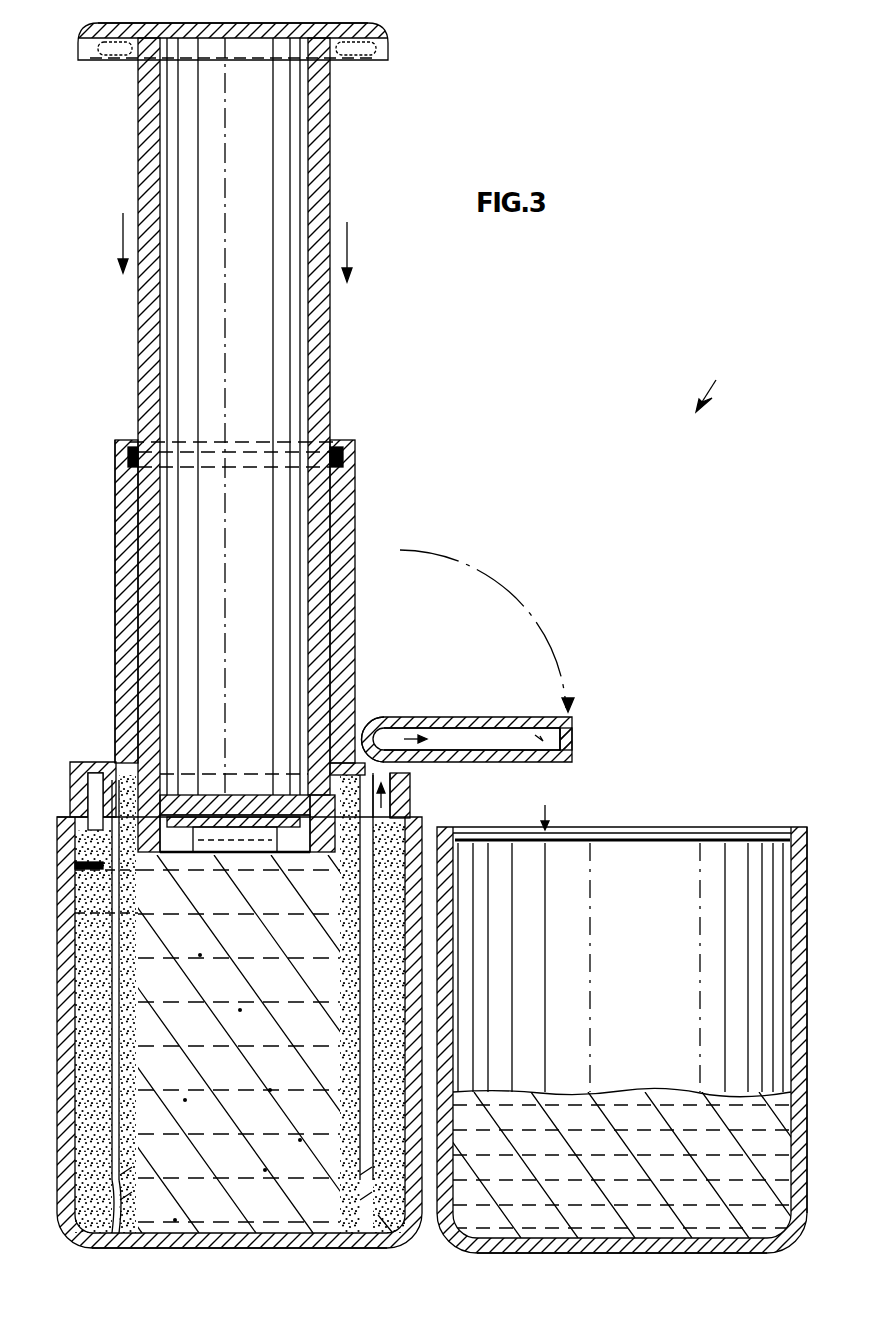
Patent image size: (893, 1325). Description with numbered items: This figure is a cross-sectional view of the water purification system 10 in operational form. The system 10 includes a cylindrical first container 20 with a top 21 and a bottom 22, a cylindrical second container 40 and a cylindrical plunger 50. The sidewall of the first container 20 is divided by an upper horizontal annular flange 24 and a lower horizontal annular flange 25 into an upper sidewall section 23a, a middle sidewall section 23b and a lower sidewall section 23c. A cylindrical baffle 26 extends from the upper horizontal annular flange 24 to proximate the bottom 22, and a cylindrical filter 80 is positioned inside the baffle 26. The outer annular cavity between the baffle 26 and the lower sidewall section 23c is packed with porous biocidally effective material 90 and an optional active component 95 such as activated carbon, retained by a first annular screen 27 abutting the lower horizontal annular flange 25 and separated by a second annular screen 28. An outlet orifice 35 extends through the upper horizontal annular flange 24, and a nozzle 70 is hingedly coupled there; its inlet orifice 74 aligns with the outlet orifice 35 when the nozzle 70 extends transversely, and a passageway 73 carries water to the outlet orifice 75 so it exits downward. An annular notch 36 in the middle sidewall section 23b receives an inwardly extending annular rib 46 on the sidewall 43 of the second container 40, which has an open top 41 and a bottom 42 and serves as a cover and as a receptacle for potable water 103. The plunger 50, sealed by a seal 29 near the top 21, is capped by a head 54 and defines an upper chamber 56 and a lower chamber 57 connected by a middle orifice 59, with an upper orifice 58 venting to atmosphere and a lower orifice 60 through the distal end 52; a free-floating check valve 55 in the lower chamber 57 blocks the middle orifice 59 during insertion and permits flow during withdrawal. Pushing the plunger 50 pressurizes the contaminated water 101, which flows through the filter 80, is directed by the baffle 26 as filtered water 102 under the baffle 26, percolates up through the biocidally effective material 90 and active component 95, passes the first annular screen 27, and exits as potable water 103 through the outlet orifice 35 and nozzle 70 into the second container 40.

The system 10 is at (716, 383).
The first container 20 is at (356, 540).
The top of first container 21 is at (342, 446).
The bottom of first container 22 is at (230, 1246).
The upper sidewall section 23a is at (114, 528).
The middle sidewall section 23b is at (70, 770).
The lower sidewall section 23c is at (58, 1108).
The upper horizontal annular flange 24 is at (91, 770).
The lower horizontal annular flange 25 is at (70, 815).
The baffle 26 is at (118, 1054).
The first annular screen 27 is at (75, 870).
The second annular screen 28 is at (78, 913).
The seal 29 is at (343, 456).
The outlet orifice 35 is at (394, 777).
The annular notch 36 is at (410, 806).
The second container 40 is at (527, 1252).
The top of second container 41 is at (664, 826).
The bottom of second container 42 is at (652, 1253).
The sidewall of second container 43 is at (800, 1040).
The annular rib 46 is at (462, 830).
The plunger 50 is at (390, 42).
The distal end of plunger 52 is at (235, 857).
The head 54 is at (224, 25).
The check valve 55 is at (235, 796).
The upper chamber 56 is at (256, 152).
The lower chamber 57 is at (251, 863).
The upper orifice 58 is at (324, 50).
The middle orifice 59 is at (234, 759).
The lower orifice 60 is at (233, 858).
The nozzle 70 is at (446, 718).
The passageway 73 is at (478, 738).
The inlet orifice 74 is at (392, 758).
The outlet orifice 75 is at (560, 750).
The filter 80 is at (130, 1208).
The biocidally effective material 90 is at (80, 1012).
The active component 95 is at (75, 893).
The contaminated water 101 is at (241, 988).
The filtered water 102 is at (380, 1232).
The potable water 103 is at (643, 1182).